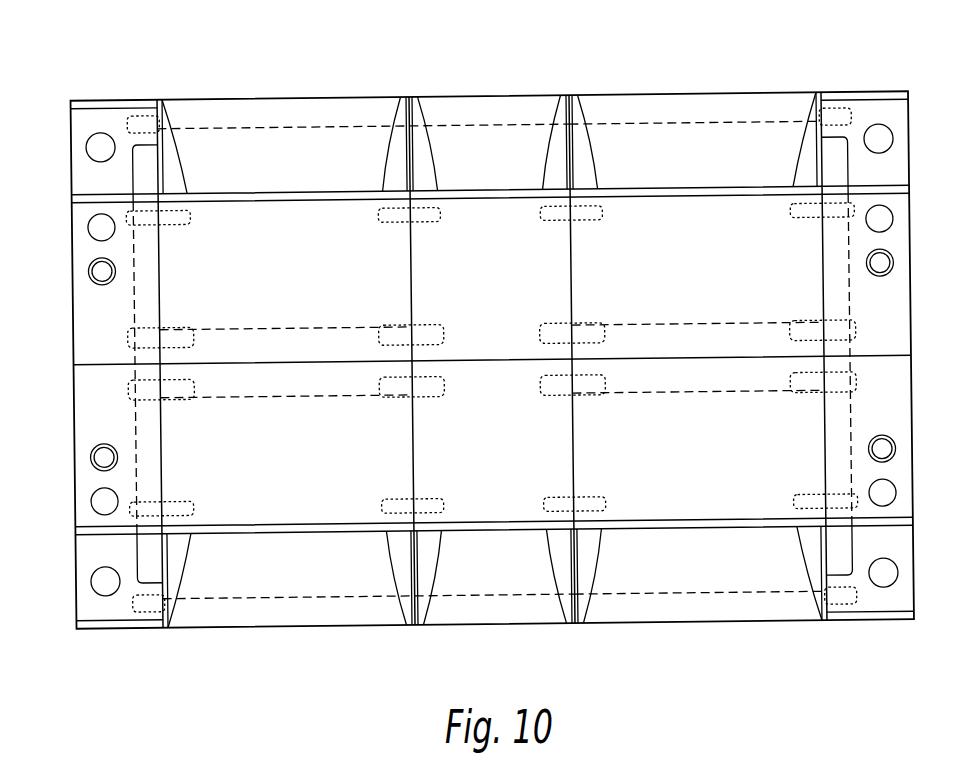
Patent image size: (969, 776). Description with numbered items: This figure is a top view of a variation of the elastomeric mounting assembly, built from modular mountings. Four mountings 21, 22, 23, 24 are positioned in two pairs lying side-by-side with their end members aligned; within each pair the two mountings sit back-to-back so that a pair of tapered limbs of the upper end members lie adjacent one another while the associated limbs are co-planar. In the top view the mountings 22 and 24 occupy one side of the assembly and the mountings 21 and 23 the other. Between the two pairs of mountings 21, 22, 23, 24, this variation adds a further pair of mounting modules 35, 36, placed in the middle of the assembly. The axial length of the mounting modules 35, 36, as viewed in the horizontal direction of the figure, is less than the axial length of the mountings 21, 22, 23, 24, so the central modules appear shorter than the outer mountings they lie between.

The mounting 21 is at (703, 572).
The mounting 22 is at (702, 142).
The mounting 23 is at (273, 575).
The mounting 24 is at (275, 145).
The mounting module 35 is at (494, 145).
The mounting module 36 is at (495, 575).